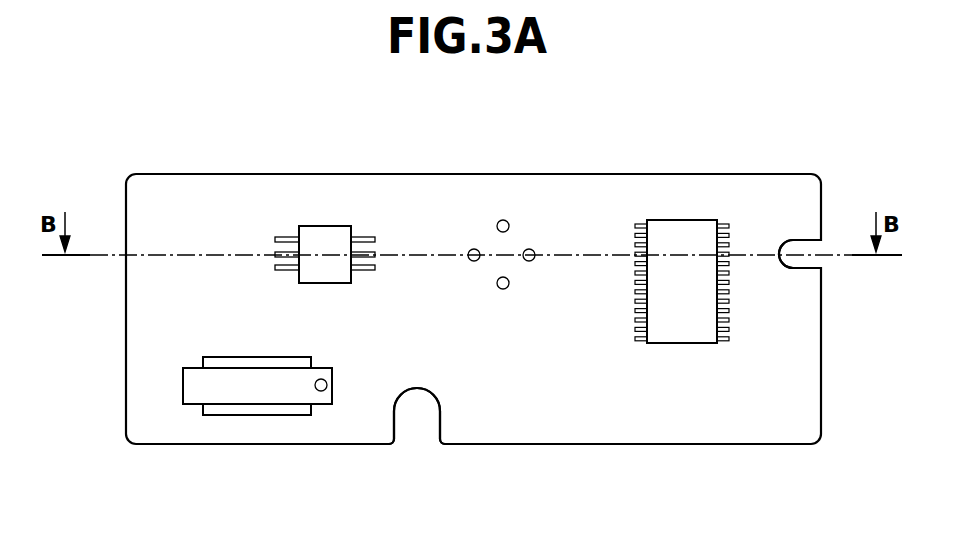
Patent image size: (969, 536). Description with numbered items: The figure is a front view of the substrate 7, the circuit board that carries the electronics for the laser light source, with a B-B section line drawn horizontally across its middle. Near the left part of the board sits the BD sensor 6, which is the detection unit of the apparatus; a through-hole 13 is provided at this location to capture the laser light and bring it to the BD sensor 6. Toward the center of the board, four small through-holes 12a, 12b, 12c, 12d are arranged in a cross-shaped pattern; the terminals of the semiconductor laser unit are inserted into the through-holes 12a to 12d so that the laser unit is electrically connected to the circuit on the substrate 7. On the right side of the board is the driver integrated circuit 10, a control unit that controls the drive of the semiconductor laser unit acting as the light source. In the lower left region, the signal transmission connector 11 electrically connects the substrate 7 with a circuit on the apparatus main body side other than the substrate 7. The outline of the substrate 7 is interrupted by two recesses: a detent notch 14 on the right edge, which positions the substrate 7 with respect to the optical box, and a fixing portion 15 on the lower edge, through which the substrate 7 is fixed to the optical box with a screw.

The BD sensor 6 is at (320, 228).
The substrate 7 is at (738, 408).
The driver integrated circuit 10 is at (682, 237).
The signal transmission connector 11 is at (235, 393).
The through-hole 12a is at (502, 220).
The through-hole 12b is at (474, 249).
The through-hole 12c is at (503, 289).
The through-hole 12d is at (531, 249).
The through-hole 13 is at (326, 197).
The detent notch 14 is at (802, 247).
The fixing portion 15 is at (398, 402).